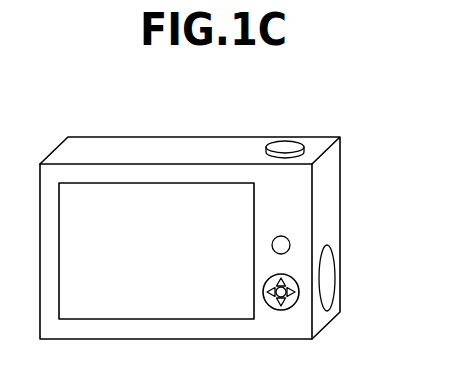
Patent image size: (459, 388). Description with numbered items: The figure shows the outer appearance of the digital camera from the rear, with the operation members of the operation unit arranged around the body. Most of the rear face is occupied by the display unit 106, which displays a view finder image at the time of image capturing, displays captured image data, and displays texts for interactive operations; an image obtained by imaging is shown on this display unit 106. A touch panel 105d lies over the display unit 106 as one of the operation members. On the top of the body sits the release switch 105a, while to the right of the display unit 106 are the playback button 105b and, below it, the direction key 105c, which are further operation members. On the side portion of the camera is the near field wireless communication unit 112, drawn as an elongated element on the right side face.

The release switch 105a is at (285, 144).
The playback button 105b is at (288, 238).
The direction key 105c is at (292, 306).
The touch panel 105d is at (111, 196).
The display unit 106 is at (208, 183).
The near field wireless communication unit 112 is at (322, 283).